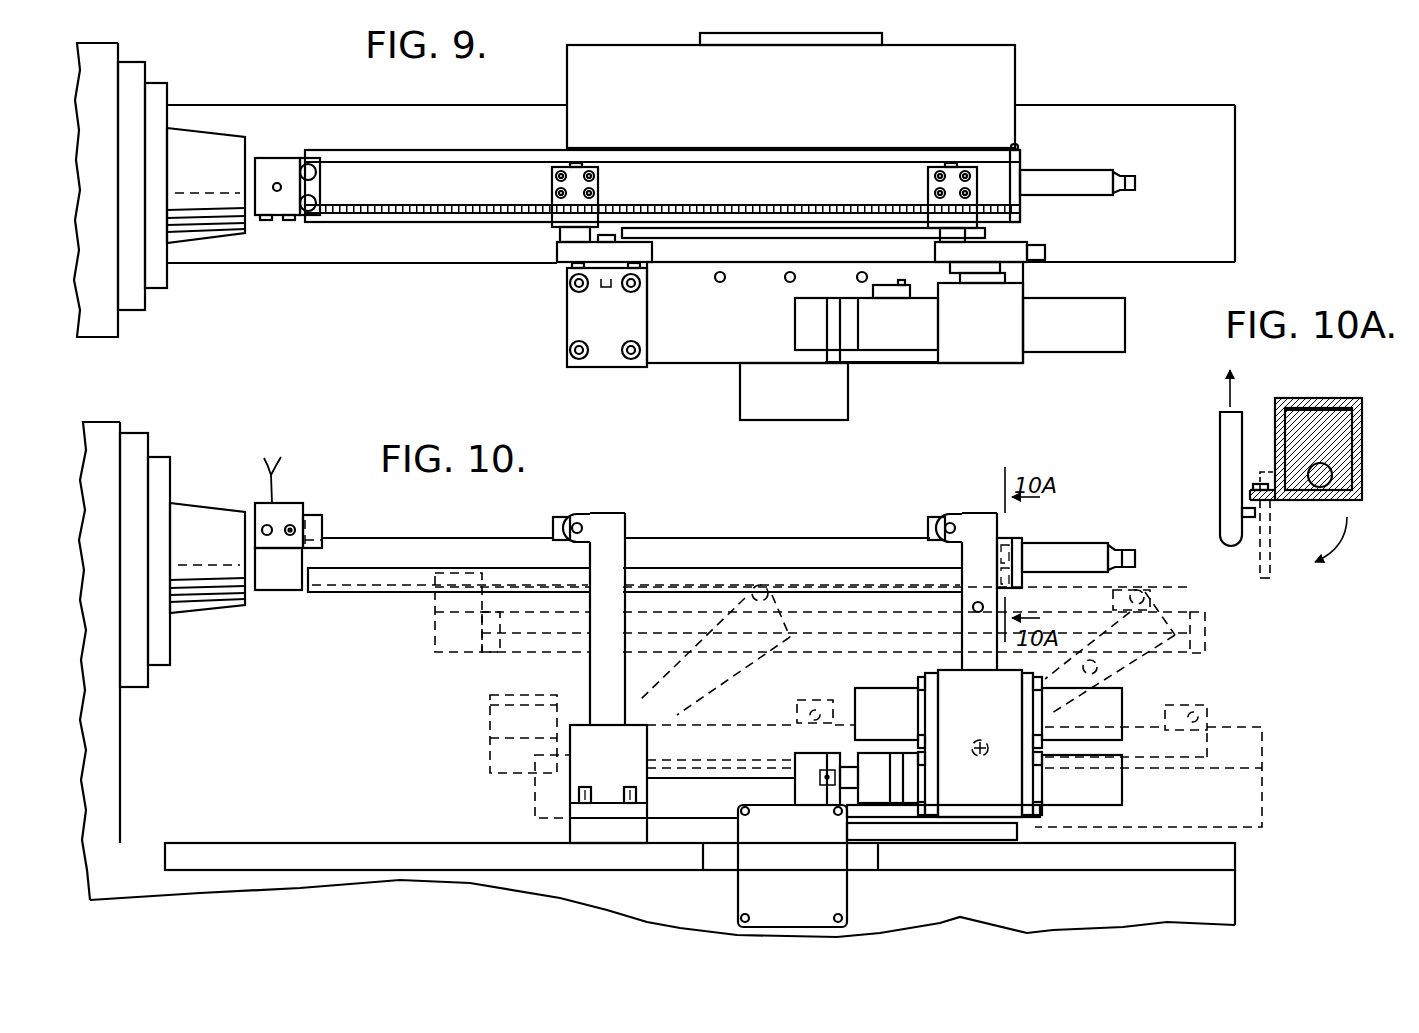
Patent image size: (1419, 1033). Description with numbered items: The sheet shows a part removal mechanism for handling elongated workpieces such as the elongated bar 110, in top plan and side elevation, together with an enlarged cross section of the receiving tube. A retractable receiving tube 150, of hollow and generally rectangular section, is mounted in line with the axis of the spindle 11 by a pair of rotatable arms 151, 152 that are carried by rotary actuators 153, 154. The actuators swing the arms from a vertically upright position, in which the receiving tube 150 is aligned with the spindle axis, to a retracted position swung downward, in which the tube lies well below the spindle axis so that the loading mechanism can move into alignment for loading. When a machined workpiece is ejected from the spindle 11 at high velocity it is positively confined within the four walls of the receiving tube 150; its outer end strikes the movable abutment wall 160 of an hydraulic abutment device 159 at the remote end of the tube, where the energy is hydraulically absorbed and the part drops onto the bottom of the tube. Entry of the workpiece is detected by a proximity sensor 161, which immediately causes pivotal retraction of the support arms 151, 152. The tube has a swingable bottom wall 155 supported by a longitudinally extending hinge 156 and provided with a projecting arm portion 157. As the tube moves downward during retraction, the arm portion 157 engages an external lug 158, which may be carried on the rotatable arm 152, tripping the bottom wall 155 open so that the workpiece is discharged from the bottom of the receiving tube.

In FIG. 9, the spindle 11 is at (207, 146).
In FIG. 10, the spindle 11 is at (222, 515).
In FIG. 10A, the elongated bar 110 is at (1332, 483).
In FIG. 10, the receiving tube 150 is at (688, 553).
In FIG. 10A, the receiving tube 150 is at (1322, 390).
In FIG. 10, the rotatable arm 151 is at (608, 552).
In FIG. 10, the rotatable arm 152 is at (982, 538).
In FIG. 9, the rotary actuator 153 is at (606, 290).
In FIG. 9, the rotary actuator 154 is at (990, 300).
In FIG. 10A, the swingable bottom wall 155 is at (1332, 502).
In FIG. 10A, the hinge 156 is at (1280, 486).
In FIG. 10A, the projecting arm portion 157 is at (1250, 490).
In FIG. 10, the external lug 158 is at (985, 607).
In FIG. 10A, the external lug 158 is at (1256, 516).
In FIG. 10, the hydraulic abutment device 159 is at (1085, 550).
In FIG. 10, the movable abutment wall 160 is at (1028, 555).
In FIG. 10, the proximity sensor 161 is at (288, 489).